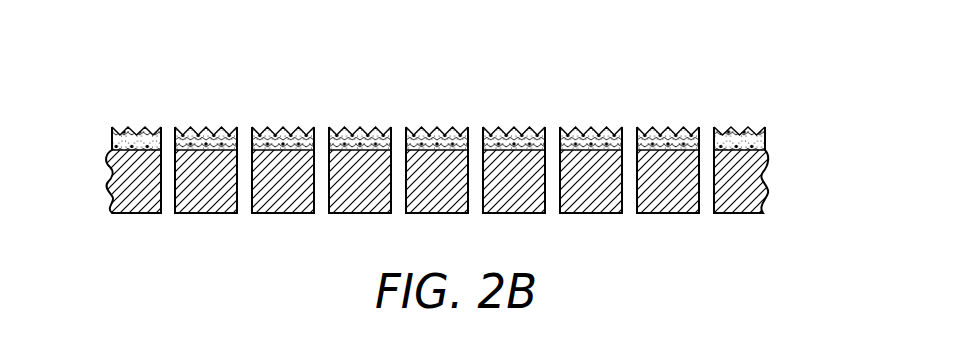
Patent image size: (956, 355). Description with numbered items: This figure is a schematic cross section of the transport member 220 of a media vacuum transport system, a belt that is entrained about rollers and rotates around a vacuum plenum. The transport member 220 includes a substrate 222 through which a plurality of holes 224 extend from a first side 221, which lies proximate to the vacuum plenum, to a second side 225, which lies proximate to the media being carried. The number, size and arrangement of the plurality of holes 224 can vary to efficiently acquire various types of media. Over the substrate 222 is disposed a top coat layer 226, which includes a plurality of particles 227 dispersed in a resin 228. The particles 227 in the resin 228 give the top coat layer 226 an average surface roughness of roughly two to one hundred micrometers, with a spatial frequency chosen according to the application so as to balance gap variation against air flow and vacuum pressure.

The transport member 220 is at (152, 65).
The first side 221 is at (738, 217).
The substrate 222 is at (752, 196).
The plurality of holes 224 is at (630, 127).
The second side 225 is at (746, 121).
The top coat layer 226 is at (770, 128).
The plurality of particles 227 is at (293, 130).
The resin 228 is at (447, 131).